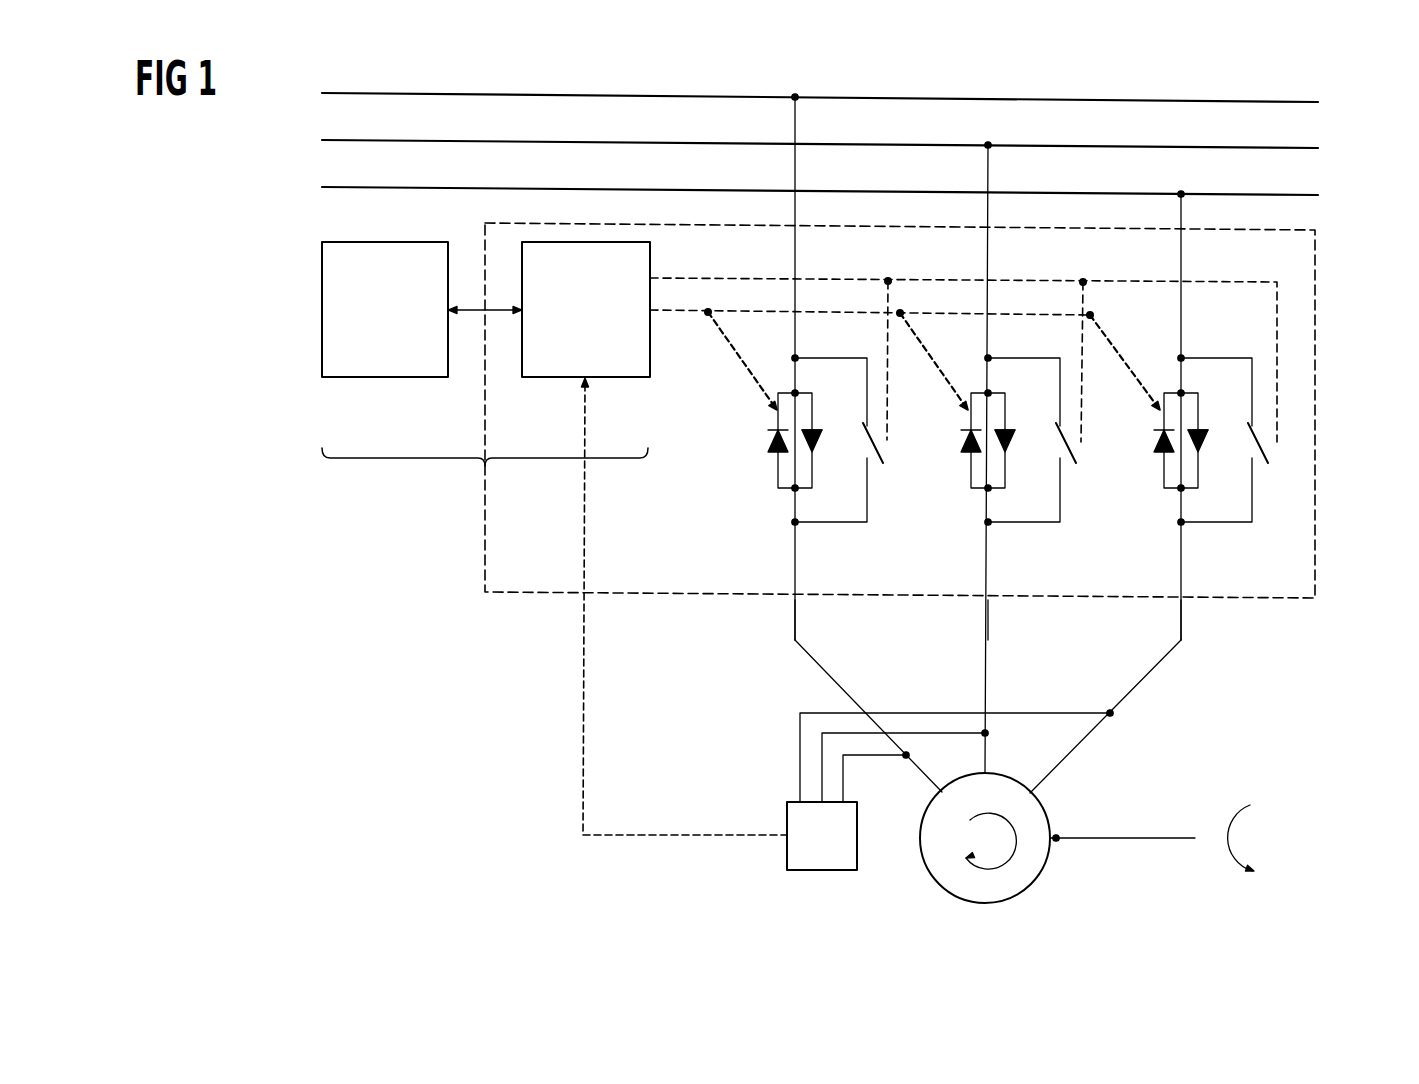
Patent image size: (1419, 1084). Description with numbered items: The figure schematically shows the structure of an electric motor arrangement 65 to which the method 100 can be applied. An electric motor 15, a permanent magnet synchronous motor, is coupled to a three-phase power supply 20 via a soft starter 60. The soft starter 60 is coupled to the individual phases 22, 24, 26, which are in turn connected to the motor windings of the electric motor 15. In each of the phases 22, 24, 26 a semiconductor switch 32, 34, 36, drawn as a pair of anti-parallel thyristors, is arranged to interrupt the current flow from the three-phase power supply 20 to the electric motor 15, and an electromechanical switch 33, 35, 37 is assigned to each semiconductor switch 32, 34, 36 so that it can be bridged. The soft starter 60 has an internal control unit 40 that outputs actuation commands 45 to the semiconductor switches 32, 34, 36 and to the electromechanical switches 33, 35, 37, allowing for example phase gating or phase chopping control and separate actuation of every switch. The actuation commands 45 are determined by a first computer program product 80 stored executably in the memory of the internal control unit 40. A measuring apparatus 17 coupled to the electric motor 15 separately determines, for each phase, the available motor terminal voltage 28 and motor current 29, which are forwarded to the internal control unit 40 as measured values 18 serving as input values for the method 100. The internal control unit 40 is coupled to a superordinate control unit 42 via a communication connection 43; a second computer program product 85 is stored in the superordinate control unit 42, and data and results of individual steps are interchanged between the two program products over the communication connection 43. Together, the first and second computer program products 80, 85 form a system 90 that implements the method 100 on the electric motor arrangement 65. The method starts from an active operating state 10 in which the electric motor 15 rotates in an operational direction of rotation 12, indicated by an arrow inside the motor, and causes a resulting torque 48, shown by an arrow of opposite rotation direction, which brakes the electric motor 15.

The active operating state 10 is at (1025, 877).
The operational direction of rotation 12 is at (1000, 868).
The electric motor 15 is at (990, 857).
The measuring apparatus 17 is at (822, 872).
The measured values 18 is at (586, 563).
The three-phase power supply 20 is at (1327, 101).
The first phase 22 is at (798, 200).
The second phase 24 is at (991, 200).
The third phase 26 is at (1184, 200).
The motor terminal voltage 28 is at (935, 622).
The motor current 29 is at (794, 633).
The semiconductor switch 32 is at (777, 470).
The electromechanical switch 33 is at (882, 458).
The semiconductor switch 34 is at (968, 488).
The electromechanical switch 35 is at (1075, 458).
The semiconductor switch 36 is at (1162, 484).
The electromechanical switch 37 is at (1268, 457).
The internal control unit 40 is at (586, 347).
The superordinate control unit 42 is at (385, 347).
The communication connection 43 is at (465, 313).
The actuation commands 45 is at (682, 280).
The resulting torque 48 is at (1215, 823).
The soft starter 60 is at (485, 565).
The electric motor arrangement 65 is at (1397, 660).
The first computer program product 80 is at (599, 328).
The second computer program product 85 is at (398, 328).
The system 90 is at (485, 476).
The method 100 is at (485, 476).